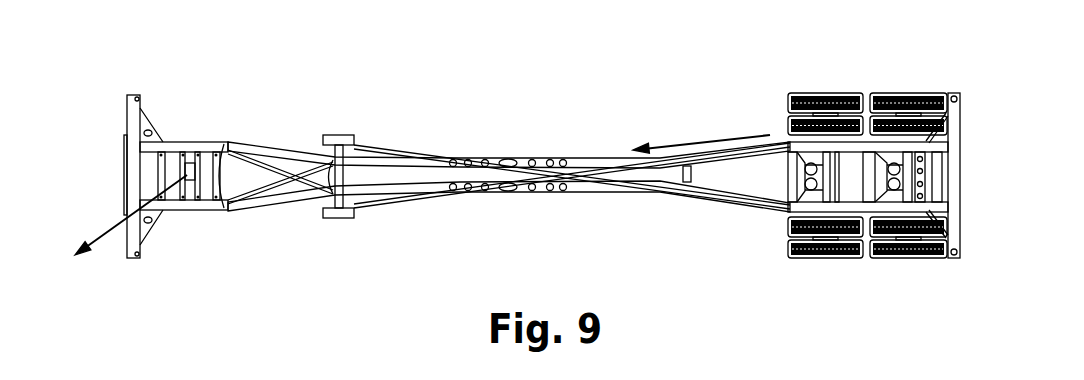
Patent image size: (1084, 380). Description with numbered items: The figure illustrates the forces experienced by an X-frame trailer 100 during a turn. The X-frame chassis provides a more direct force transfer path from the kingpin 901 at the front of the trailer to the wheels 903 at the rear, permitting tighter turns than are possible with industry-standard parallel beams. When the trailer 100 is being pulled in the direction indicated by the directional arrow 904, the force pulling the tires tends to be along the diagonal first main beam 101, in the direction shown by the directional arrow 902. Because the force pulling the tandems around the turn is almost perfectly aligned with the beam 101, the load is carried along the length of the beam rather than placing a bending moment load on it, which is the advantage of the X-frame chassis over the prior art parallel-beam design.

The X-frame trailer 100 is at (439, 78).
The diagonal first main beam 101 is at (625, 158).
The kingpin 901 is at (191, 162).
The directional arrow 902 is at (738, 138).
The wheels 903 is at (898, 93).
The directional arrow 904 is at (110, 230).